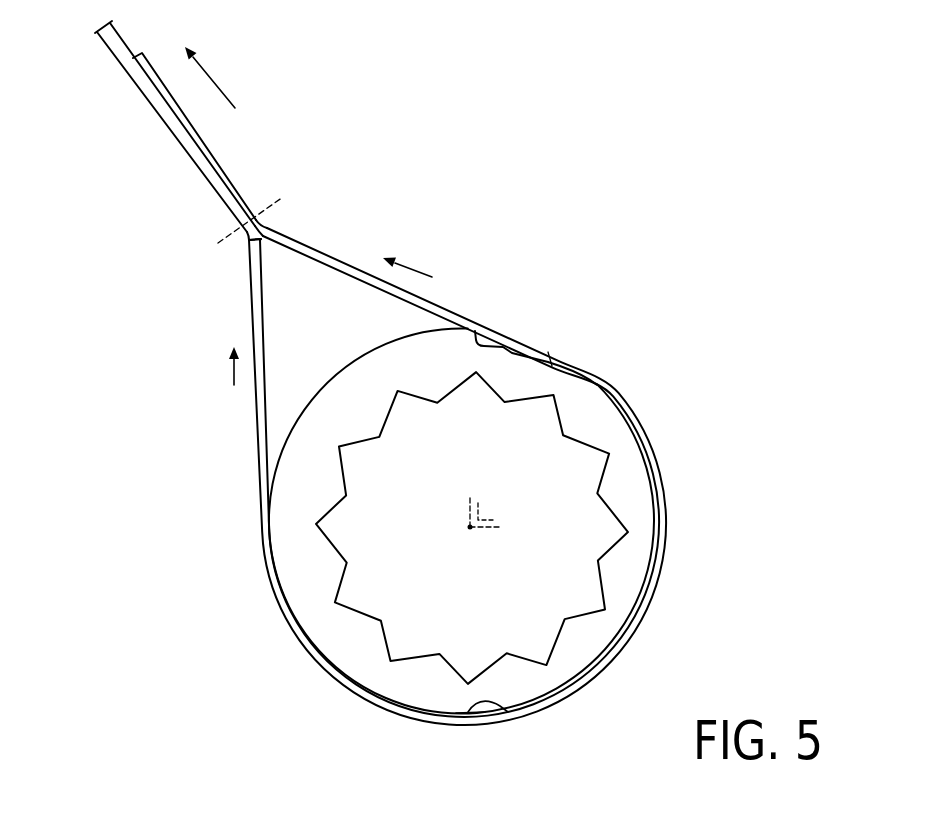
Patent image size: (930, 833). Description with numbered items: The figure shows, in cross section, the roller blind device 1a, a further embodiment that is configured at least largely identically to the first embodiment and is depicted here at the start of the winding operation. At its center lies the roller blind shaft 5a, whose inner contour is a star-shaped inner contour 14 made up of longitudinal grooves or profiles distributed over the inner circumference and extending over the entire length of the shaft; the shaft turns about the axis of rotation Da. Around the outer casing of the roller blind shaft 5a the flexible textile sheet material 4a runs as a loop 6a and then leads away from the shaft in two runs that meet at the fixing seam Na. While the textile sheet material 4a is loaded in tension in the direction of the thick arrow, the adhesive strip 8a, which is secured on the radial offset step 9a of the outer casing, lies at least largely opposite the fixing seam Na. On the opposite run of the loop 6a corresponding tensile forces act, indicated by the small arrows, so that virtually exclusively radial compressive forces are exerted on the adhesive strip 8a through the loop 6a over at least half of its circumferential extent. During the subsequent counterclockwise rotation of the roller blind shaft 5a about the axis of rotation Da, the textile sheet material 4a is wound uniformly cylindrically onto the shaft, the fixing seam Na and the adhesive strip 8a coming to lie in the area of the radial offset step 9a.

The roller blind device 1a is at (690, 308).
The flexible textile sheet material 4a is at (103, 39).
The fixing seam Na is at (250, 220).
The loop 6a is at (258, 283).
The roller blind shaft 5a is at (352, 378).
The adhesive strip 8a is at (657, 532).
The star-shaped inner contour 14 is at (340, 503).
The axis of rotation Da is at (470, 528).
The radial offset step 9a is at (503, 703).